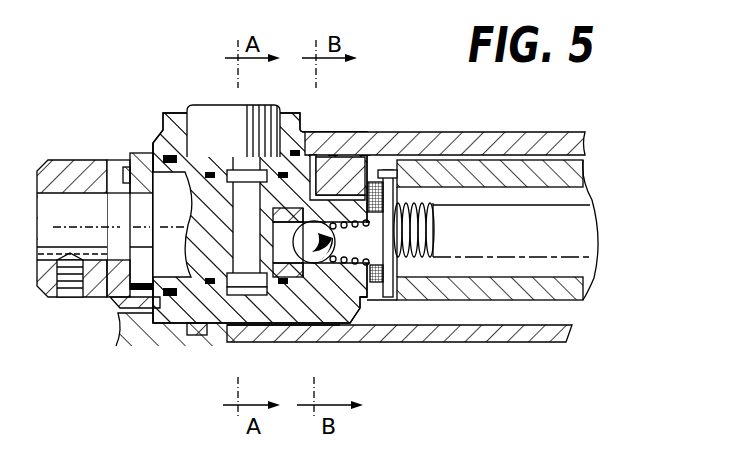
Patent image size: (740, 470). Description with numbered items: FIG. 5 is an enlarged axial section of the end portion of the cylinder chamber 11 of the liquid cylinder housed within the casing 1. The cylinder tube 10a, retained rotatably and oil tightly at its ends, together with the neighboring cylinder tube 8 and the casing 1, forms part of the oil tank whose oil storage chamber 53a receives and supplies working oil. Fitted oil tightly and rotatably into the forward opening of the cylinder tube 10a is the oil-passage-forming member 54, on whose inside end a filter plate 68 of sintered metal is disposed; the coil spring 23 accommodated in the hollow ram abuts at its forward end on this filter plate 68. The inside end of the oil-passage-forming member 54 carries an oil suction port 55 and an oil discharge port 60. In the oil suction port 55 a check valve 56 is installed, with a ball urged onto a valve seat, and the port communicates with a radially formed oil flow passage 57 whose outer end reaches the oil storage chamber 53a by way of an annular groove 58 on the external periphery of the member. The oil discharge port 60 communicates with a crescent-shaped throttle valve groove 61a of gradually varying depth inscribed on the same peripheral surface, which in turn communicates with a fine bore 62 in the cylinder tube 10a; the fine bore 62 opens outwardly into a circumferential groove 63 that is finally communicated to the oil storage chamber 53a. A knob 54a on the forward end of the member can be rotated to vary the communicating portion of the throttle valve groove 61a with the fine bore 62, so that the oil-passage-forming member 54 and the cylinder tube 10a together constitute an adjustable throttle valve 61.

The casing 1 is at (552, 145).
The cylinder tube 8 is at (556, 338).
The cylinder tube 10a is at (238, 195).
The cylinder chamber 11 is at (508, 272).
The coil spring 23 is at (424, 205).
The oil storage chamber 53a is at (452, 312).
The oil-passage-forming member 54 is at (167, 193).
The knob 54a is at (70, 160).
The oil suction port 55 is at (362, 253).
The check valve 56 is at (325, 264).
The oil flow passage 57 is at (240, 178).
The annular groove 58 is at (235, 298).
The oil discharge port 60 is at (384, 180).
The adjustable throttle valve 61 is at (325, 152).
The throttle valve groove 61a is at (352, 172).
The fine bore 62 is at (315, 152).
The circumferential groove 63 is at (302, 300).
The filter plate 68 is at (386, 190).